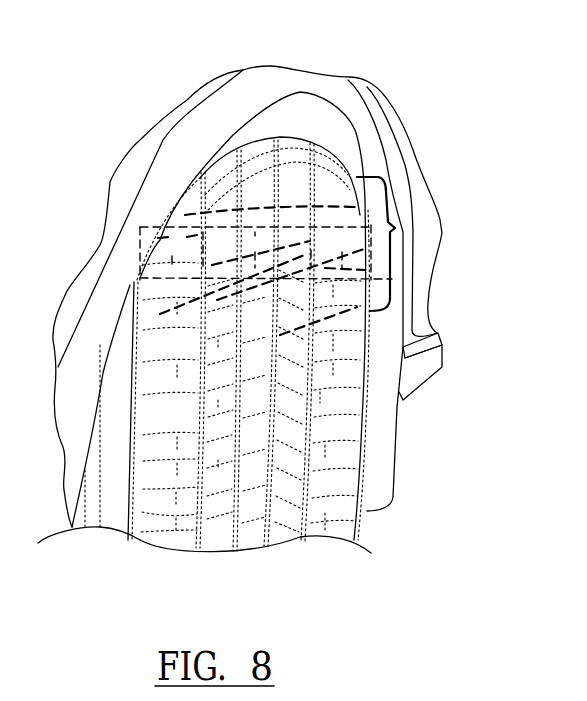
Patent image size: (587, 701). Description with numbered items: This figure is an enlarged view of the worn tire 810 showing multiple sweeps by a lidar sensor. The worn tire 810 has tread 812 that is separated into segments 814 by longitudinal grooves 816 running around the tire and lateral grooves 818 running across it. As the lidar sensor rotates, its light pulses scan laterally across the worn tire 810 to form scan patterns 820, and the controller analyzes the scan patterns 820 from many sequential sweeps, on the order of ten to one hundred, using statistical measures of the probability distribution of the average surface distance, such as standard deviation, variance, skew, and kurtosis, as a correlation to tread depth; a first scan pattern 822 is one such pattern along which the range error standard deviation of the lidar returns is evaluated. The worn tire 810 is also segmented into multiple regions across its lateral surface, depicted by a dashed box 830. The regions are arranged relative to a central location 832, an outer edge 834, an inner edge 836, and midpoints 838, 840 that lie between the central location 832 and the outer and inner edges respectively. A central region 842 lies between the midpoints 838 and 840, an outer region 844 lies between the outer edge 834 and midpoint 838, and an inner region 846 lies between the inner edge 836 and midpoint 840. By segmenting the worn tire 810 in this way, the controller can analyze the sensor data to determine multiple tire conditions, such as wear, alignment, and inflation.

The worn tire 810 is at (133, 116).
The tread 812 is at (122, 356).
The segments 814 is at (202, 295).
The longitudinal grooves 816 is at (235, 372).
The lateral grooves 818 is at (200, 447).
The scan patterns 820 is at (397, 228).
The first scan pattern 822 is at (285, 170).
The dashed box 830 is at (129, 246).
The central location 832 is at (254, 217).
The outer edge 834 is at (381, 217).
The inner edge 836 is at (128, 225).
The midpoint 838 is at (313, 217).
The midpoint 840 is at (201, 217).
The central region 842 is at (255, 243).
The outer region 844 is at (342, 248).
The inner region 846 is at (172, 251).